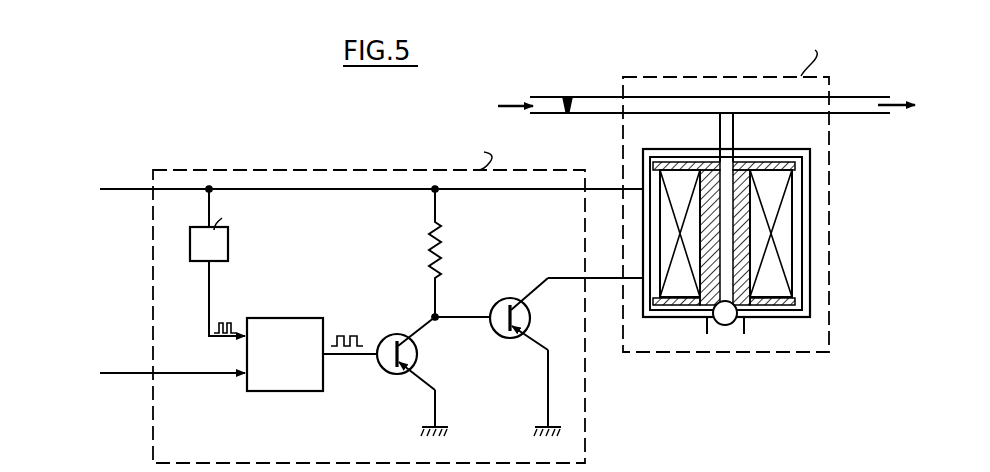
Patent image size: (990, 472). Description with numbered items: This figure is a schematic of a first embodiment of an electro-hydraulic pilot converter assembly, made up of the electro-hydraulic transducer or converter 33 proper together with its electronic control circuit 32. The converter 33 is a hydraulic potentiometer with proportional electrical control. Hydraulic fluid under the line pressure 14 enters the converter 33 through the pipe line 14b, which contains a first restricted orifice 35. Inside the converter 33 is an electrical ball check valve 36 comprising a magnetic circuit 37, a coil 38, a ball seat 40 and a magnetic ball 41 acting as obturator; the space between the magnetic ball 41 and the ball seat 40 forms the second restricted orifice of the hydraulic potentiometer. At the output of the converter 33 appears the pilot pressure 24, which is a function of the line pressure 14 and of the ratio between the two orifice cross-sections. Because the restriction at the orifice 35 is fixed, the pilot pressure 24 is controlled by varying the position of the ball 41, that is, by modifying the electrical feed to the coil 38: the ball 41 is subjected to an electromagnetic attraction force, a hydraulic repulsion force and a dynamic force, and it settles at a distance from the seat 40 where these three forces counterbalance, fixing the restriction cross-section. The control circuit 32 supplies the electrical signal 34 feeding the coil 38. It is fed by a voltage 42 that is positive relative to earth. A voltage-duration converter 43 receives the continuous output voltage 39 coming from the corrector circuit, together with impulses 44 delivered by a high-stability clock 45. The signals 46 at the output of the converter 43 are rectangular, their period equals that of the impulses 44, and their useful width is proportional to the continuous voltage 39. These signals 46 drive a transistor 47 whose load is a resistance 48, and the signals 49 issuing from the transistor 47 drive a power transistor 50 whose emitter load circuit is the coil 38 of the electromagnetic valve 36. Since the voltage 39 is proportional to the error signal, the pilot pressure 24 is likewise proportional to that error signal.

The line pressure 14 is at (509, 100).
The pipe line 14b is at (552, 95).
The pilot pressure 24 is at (894, 102).
The electronic control circuit 32 is at (276, 168).
The electro-hydraulic transducer or converter 33 is at (724, 76).
The electrical signal 34 is at (602, 278).
The first restricted orifice 35 is at (570, 100).
The electrical ball check valve 36 is at (812, 211).
The magnetic circuit 37 is at (746, 310).
The coil 38 is at (783, 246).
The output voltage 39 is at (124, 372).
The ball seat 40 is at (702, 310).
The magnetic ball 41 is at (725, 325).
The voltage 42 is at (128, 188).
The voltage-duration converter 43 is at (280, 318).
The impulses 44 is at (206, 306).
The high-stability clock 45 is at (220, 244).
The signals 46 is at (347, 356).
The transistor 47 is at (422, 356).
The resistance 48 is at (440, 258).
The signals 49 is at (465, 317).
The power transistor 50 is at (518, 297).